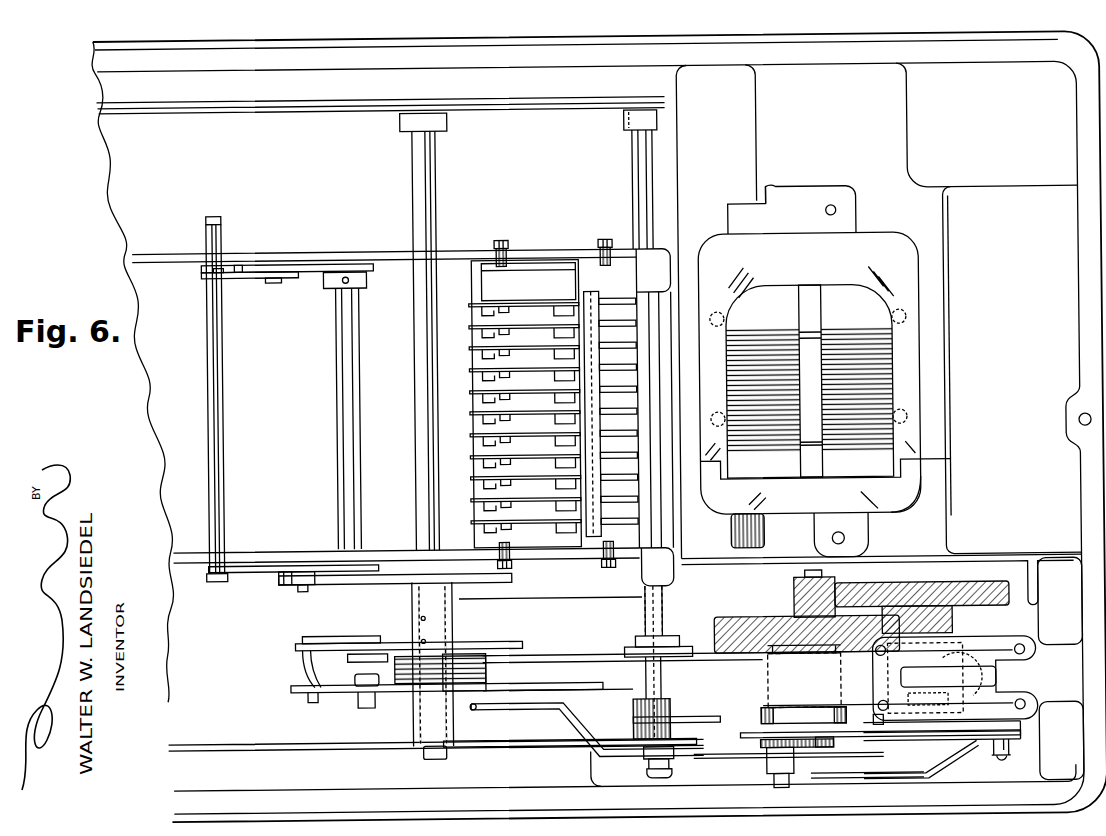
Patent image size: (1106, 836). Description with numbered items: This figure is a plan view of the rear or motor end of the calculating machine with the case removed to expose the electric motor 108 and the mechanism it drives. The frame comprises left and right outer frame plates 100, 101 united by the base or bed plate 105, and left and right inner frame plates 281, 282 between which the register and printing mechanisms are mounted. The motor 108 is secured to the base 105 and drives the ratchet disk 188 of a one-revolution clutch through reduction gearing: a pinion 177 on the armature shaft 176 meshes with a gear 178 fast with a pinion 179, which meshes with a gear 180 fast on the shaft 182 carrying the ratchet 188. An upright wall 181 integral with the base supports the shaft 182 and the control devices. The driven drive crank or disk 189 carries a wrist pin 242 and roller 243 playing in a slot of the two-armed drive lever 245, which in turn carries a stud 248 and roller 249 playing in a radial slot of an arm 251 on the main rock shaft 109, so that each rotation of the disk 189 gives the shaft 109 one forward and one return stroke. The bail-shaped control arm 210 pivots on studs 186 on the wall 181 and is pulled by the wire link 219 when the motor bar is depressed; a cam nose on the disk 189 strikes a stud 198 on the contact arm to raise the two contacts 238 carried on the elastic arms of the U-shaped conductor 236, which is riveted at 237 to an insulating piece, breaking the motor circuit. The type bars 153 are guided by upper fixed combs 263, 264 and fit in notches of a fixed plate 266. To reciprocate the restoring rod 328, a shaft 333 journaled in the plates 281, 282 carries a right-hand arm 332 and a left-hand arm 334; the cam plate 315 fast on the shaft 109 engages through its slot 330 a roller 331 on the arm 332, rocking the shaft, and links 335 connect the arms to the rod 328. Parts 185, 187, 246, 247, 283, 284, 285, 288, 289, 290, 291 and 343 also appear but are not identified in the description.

The left outer frame plate 100 is at (190, 109).
The right outer frame plate 101 is at (233, 729).
The base or bed plate 105 is at (130, 203).
The electric motor 108 is at (824, 370).
The main rock shaft 109 is at (418, 380).
The type bars 153 is at (582, 370).
The armature shaft 176 is at (803, 577).
The pinion 177 is at (792, 597).
The gear 178 is at (990, 590).
The pinion 179 is at (940, 627).
The gear 180 is at (725, 618).
The upright wall 181 is at (770, 650).
The shaft 182 is at (765, 684).
The nut 185 is at (660, 780).
The stud 186 is at (954, 678).
The collar 187 is at (758, 657).
The ratchet disk 188 is at (814, 750).
The drive crank or disk 189 is at (737, 737).
The stud 198 is at (940, 740).
The control arm 210 is at (1020, 732).
The wire link 219 is at (830, 781).
The conductor 236 is at (1012, 646).
The rivet 237 is at (882, 675).
The contacts 238 is at (1024, 652).
The stud or wrist pin 242 is at (780, 790).
The roller 243 is at (763, 768).
The two-armed drive lever 245 is at (568, 721).
The sleeve 246 is at (757, 746).
The washer 247 is at (636, 768).
The stud 248 is at (470, 709).
The roller 249 is at (485, 670).
The arm 251 is at (342, 693).
The upper fixed comb 263 is at (468, 311).
The upper fixed comb 264 is at (597, 362).
The fixed plate 266 is at (540, 272).
The left inner frame plate 281 is at (595, 560).
The right inner frame plate 282 is at (565, 250).
The bus bar 283 is at (650, 490).
The plate 284 is at (637, 723).
The post 285 is at (627, 123).
The rod 288 is at (697, 716).
The nut 289 is at (662, 750).
The hub 290 is at (633, 705).
The pin 291 is at (870, 723).
The cam plate 315 is at (362, 582).
The restoring rod 328 is at (228, 408).
The slot 330 is at (290, 583).
The roller 331 is at (308, 583).
The right-hand arm 332 is at (322, 569).
The shaft 333 is at (343, 361).
The left-hand arm 334 is at (297, 272).
The links 335 is at (243, 272).
The contact spring 343 is at (470, 524).